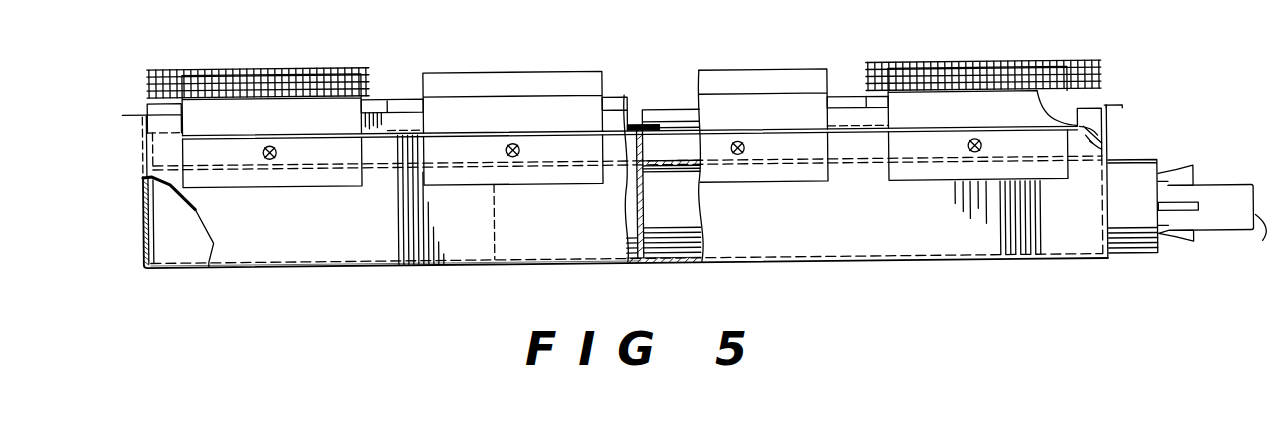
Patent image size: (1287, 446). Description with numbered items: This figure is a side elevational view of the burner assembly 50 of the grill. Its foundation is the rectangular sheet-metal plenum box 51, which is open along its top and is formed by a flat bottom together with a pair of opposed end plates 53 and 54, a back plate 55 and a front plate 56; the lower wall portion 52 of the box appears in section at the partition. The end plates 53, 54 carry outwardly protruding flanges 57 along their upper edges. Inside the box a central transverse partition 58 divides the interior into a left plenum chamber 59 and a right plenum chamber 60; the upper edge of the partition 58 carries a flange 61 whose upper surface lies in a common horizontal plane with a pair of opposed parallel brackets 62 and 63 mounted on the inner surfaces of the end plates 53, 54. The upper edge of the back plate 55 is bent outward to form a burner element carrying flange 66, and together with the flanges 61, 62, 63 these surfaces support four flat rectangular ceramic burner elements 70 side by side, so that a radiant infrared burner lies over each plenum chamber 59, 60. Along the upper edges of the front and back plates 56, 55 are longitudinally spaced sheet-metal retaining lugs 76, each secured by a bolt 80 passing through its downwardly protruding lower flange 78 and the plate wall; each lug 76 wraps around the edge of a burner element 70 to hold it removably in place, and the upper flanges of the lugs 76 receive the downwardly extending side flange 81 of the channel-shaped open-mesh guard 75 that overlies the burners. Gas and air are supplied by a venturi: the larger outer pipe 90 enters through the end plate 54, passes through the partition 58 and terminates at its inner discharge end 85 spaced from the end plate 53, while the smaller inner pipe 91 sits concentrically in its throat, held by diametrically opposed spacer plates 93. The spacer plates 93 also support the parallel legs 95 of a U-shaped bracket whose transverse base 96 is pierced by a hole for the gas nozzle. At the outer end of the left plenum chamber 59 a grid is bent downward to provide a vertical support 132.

The burner assembly 50 is at (892, 55).
The plenum box 51 is at (832, 250).
The bottom plate section 52 is at (670, 266).
The end plate 53 is at (143, 195).
The end plate 54 is at (1108, 152).
The back plate 55 is at (681, 153).
The front plate 56 is at (281, 259).
The flange 57 is at (128, 108).
The central transverse partition 58 is at (637, 186).
The left plenum chamber 59 is at (628, 155).
The right plenum chamber 60 is at (648, 141).
The flange 61 is at (648, 125).
The bracket 62 is at (147, 142).
The bracket 63 is at (1107, 135).
The burner element carrying flange 66 is at (393, 136).
The burner element 70 is at (376, 100).
The guard 75 is at (1092, 70).
The retaining lug 76 is at (258, 104).
The lower flange 78 is at (289, 186).
The bolt 80 is at (266, 143).
The side flange 81 is at (1060, 70).
The inner discharge end 85 is at (492, 215).
The outer pipe 90 is at (1123, 252).
The inner pipe 91 is at (1178, 247).
The spacer plate 93 is at (1196, 213).
The leg 95 is at (1217, 193).
The base 96 is at (1251, 237).
The vertical support 132 is at (160, 223).